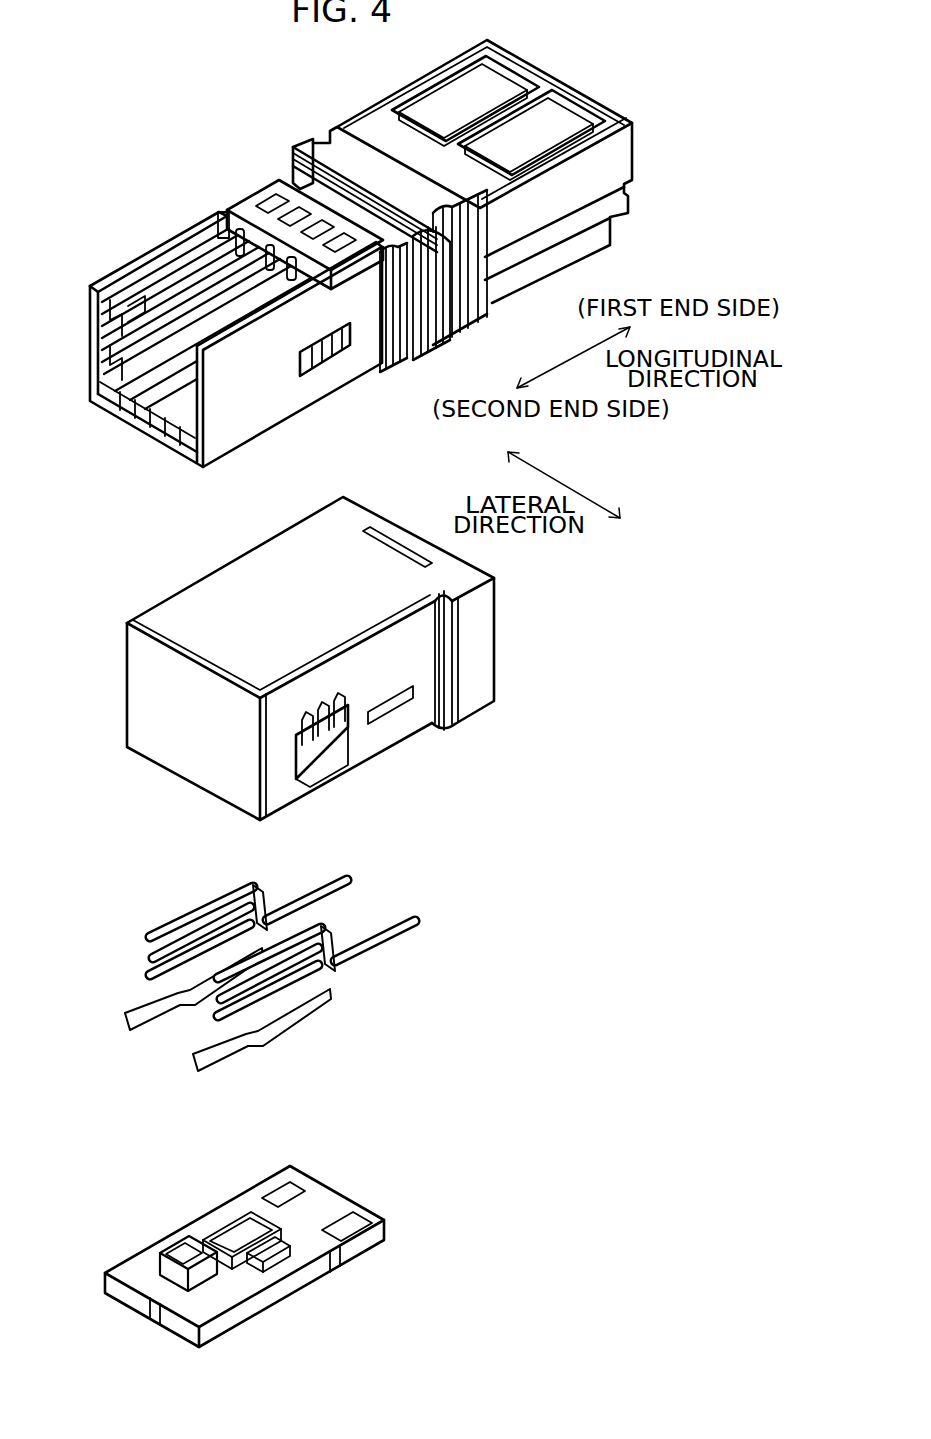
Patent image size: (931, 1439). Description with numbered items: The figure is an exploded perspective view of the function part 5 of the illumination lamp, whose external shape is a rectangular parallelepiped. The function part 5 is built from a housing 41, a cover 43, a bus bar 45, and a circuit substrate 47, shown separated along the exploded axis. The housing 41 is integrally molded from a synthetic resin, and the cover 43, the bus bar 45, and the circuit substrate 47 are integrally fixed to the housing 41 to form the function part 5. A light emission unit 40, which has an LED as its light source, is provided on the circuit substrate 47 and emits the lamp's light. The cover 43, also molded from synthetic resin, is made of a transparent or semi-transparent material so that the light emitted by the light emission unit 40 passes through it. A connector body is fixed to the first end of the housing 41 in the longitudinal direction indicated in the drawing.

The function part 5 is at (492, 200).
The housing 41 is at (365, 100).
The light emission unit 40 is at (247, 400).
The cover 43 is at (200, 573).
The bus bar 45 is at (307, 887).
The circuit substrate 47 is at (323, 1185).